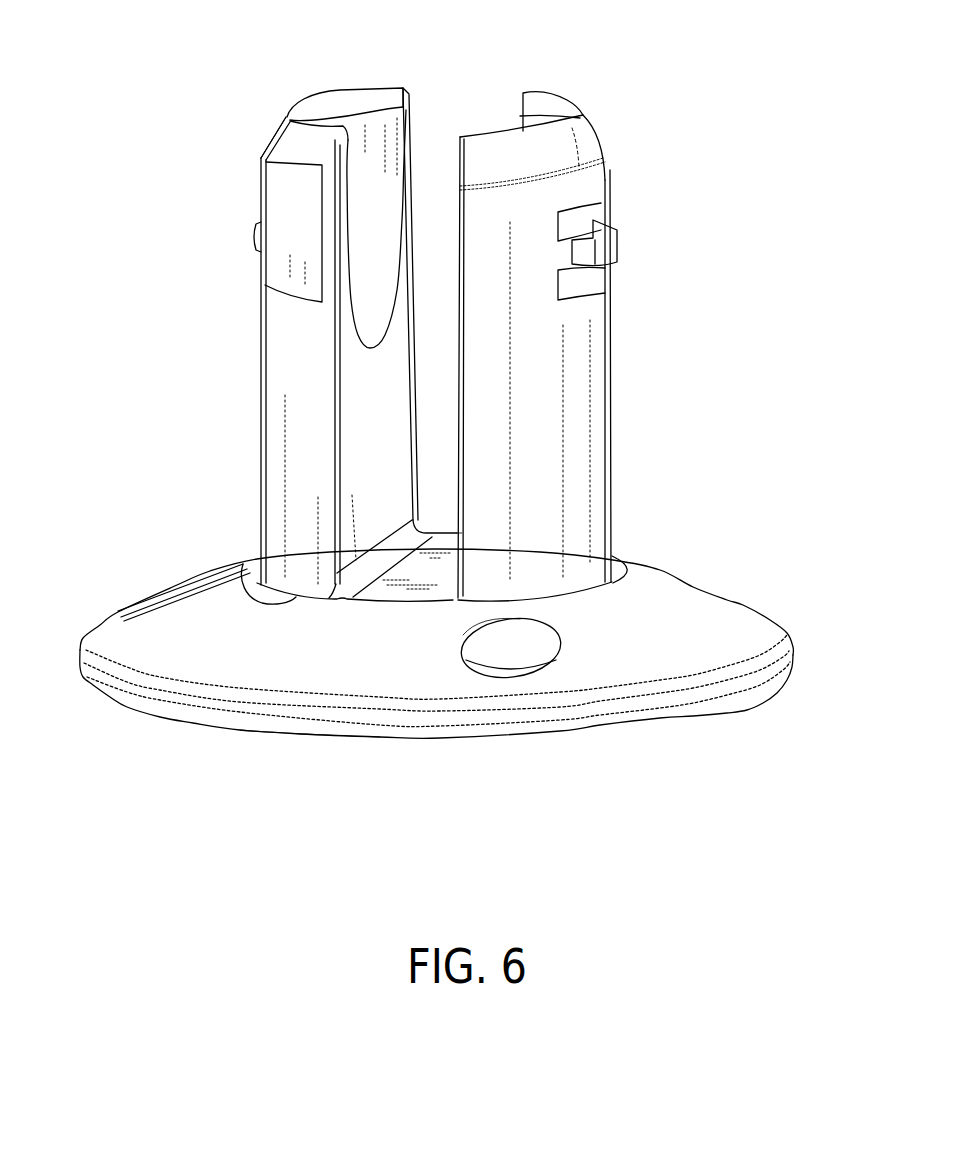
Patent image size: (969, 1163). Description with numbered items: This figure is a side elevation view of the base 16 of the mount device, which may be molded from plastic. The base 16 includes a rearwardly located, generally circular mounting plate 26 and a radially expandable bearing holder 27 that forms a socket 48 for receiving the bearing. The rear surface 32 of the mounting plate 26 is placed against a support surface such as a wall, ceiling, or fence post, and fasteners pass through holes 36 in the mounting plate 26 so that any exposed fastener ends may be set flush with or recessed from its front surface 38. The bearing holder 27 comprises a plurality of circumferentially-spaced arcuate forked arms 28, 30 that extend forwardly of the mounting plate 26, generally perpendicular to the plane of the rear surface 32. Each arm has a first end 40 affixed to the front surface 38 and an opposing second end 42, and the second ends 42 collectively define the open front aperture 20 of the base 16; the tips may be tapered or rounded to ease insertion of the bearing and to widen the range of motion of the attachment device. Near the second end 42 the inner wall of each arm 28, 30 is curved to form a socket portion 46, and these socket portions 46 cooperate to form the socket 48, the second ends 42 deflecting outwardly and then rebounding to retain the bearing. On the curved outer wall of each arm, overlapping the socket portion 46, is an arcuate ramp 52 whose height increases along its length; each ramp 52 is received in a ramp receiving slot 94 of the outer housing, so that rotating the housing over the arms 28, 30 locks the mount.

The base 16 is at (648, 598).
The front aperture 20 is at (445, 139).
The mounting plate 26 is at (260, 665).
The bearing holder 27 is at (286, 121).
The forked arm 28 is at (585, 522).
The forked arm 30 is at (275, 448).
The rear surface 32 is at (622, 727).
The hole 36 is at (527, 673).
The front surface 38 is at (723, 643).
The first end 40 is at (252, 603).
The second end 42 is at (372, 88).
The socket portion 46 is at (370, 302).
The socket 48 is at (368, 232).
The arcuate ramp 52 is at (253, 237).
The ramp receiving slot 94 is at (593, 213).